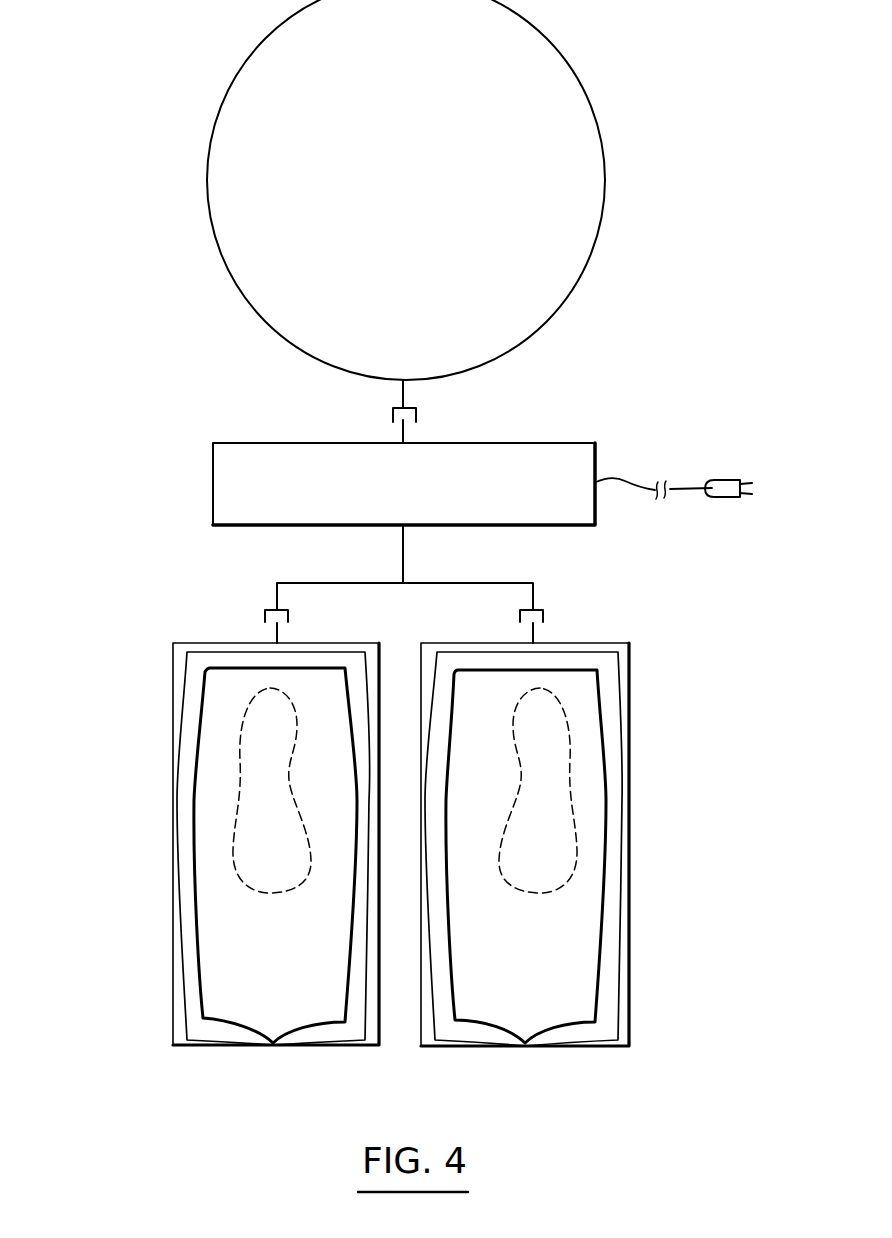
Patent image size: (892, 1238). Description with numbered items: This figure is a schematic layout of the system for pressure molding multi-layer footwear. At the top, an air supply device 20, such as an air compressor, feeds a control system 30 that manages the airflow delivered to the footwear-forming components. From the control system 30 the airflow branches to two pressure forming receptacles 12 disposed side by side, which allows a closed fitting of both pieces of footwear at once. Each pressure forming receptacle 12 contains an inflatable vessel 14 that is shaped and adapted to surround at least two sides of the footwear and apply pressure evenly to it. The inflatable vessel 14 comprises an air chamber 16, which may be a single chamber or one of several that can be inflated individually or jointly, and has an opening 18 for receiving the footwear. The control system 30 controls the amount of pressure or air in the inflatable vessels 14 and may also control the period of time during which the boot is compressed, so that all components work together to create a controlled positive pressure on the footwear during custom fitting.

The pressure forming receptacle 12 is at (172, 772).
The inflatable vessel 14 is at (185, 703).
The air chamber 16 is at (192, 978).
The opening 18 is at (213, 878).
The air supply device 20 is at (225, 176).
The control system 30 is at (222, 468).